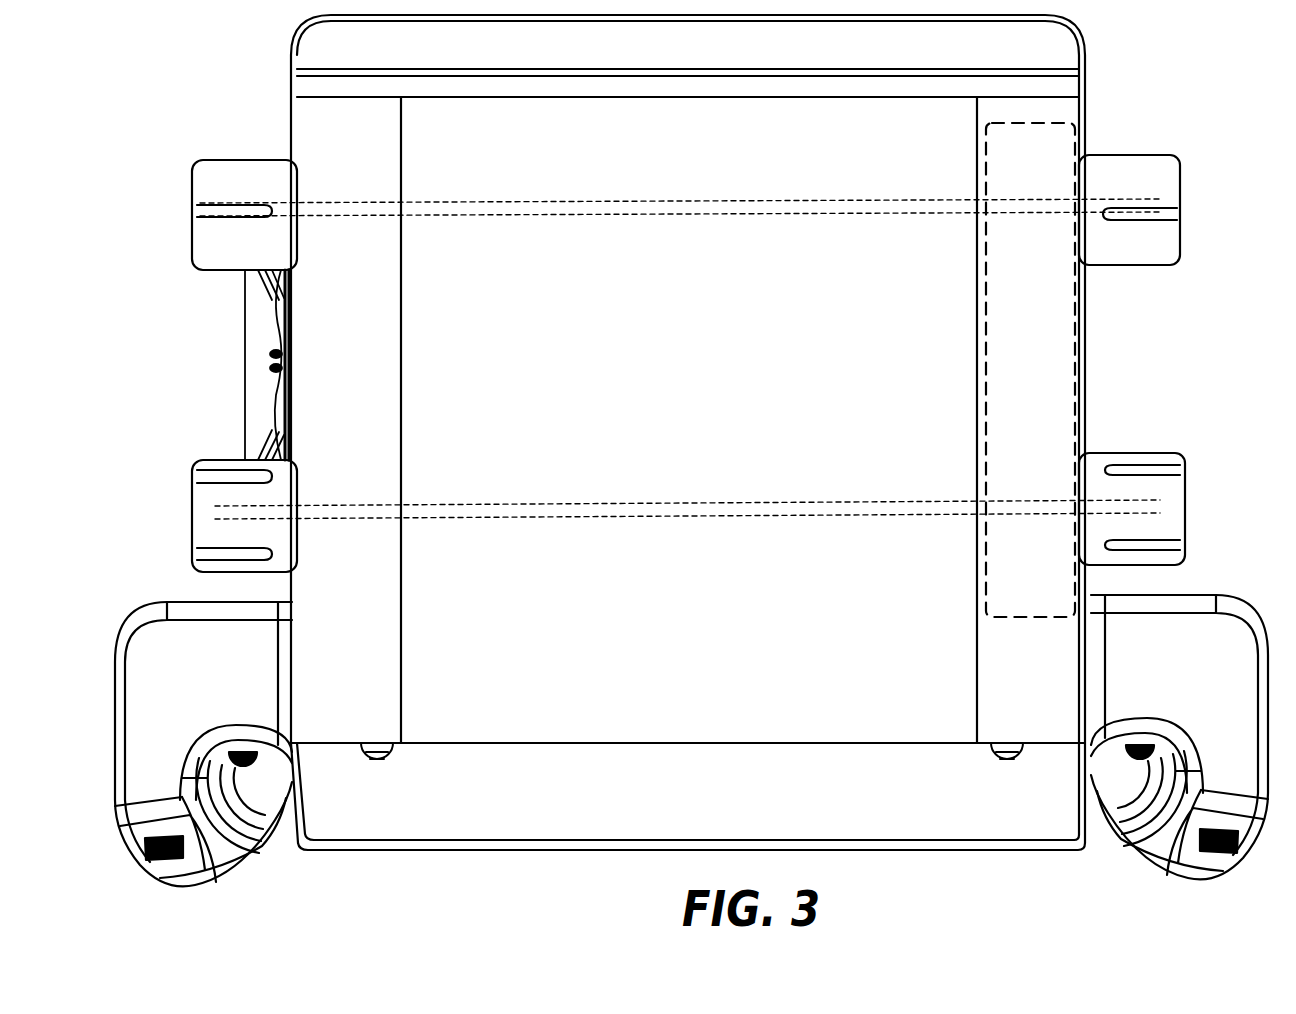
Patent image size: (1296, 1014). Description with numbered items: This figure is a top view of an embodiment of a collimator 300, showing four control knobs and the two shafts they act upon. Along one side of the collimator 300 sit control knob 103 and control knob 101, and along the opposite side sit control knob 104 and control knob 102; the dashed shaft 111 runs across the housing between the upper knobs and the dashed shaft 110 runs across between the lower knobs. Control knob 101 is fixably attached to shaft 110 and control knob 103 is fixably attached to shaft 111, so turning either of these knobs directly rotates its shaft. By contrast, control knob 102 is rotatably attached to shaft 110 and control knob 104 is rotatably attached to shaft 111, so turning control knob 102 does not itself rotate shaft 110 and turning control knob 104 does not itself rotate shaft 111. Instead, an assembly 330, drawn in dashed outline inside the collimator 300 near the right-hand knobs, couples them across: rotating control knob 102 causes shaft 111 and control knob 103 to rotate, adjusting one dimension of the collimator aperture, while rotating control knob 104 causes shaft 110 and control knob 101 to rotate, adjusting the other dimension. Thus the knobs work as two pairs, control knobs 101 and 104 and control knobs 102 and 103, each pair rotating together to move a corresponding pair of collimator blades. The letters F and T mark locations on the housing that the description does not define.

The collimator 300 is at (207, 368).
The control knob 101 is at (188, 488).
The control knob 102 is at (1189, 538).
The control knob 103 is at (206, 156).
The control knob 104 is at (1103, 149).
The shaft 110 is at (457, 521).
The shaft 111 is at (476, 196).
The assembly 330 is at (1049, 372).
The front F is at (505, 862).
The tray T is at (760, 668).